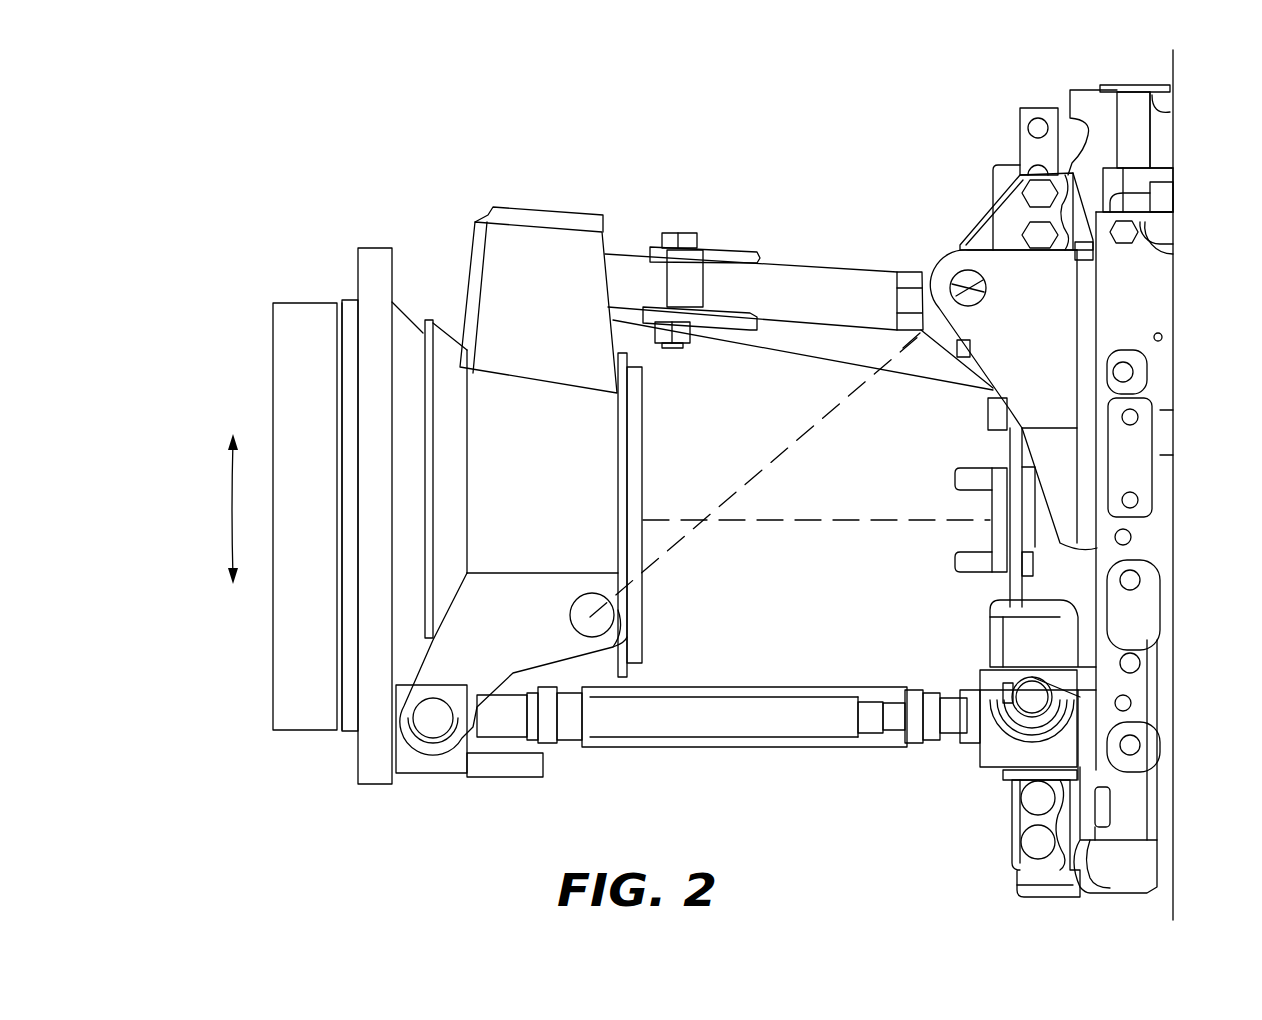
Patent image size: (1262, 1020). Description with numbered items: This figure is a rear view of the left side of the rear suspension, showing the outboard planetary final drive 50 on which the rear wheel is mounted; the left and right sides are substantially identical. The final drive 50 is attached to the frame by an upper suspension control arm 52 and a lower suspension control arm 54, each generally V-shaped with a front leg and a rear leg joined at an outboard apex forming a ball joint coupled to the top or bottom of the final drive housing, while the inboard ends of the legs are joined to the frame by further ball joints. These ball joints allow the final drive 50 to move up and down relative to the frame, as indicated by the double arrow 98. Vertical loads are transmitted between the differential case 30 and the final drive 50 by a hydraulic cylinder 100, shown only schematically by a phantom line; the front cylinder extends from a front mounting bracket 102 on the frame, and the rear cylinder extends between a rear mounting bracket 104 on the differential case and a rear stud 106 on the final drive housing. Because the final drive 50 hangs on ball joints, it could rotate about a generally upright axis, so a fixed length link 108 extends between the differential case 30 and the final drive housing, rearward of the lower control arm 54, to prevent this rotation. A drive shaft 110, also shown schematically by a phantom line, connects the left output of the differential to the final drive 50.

The differential case 30 is at (1152, 303).
The outboard planetary final drive 50 is at (406, 305).
The upper suspension control arm 52 is at (856, 255).
The lower suspension control arm 54 is at (752, 682).
The double arrow 98 is at (232, 505).
The hydraulic cylinder 100 is at (792, 445).
The front mounting bracket 102 is at (983, 218).
The rear mounting bracket 104 is at (937, 270).
The rear stud 106 is at (607, 630).
The fixed length link 108 is at (770, 737).
The drive shaft 110 is at (813, 522).